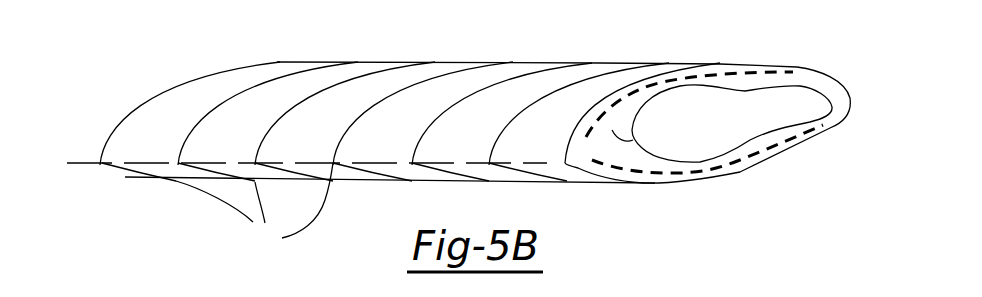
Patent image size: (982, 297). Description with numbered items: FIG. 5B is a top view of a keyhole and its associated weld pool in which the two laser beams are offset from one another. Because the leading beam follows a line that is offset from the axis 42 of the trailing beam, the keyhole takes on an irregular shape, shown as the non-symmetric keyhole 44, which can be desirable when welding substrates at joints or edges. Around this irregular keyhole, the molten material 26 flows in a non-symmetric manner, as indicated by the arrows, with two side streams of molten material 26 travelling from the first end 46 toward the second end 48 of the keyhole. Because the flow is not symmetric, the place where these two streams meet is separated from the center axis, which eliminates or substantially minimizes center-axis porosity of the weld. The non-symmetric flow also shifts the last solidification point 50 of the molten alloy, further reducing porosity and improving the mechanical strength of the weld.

The molten material 26 is at (826, 122).
The axis 42 is at (87, 162).
The non-symmetric keyhole 44 is at (730, 120).
The first end 46 is at (840, 88).
The second end 48 is at (612, 130).
The last solidification point 50 is at (217, 210).